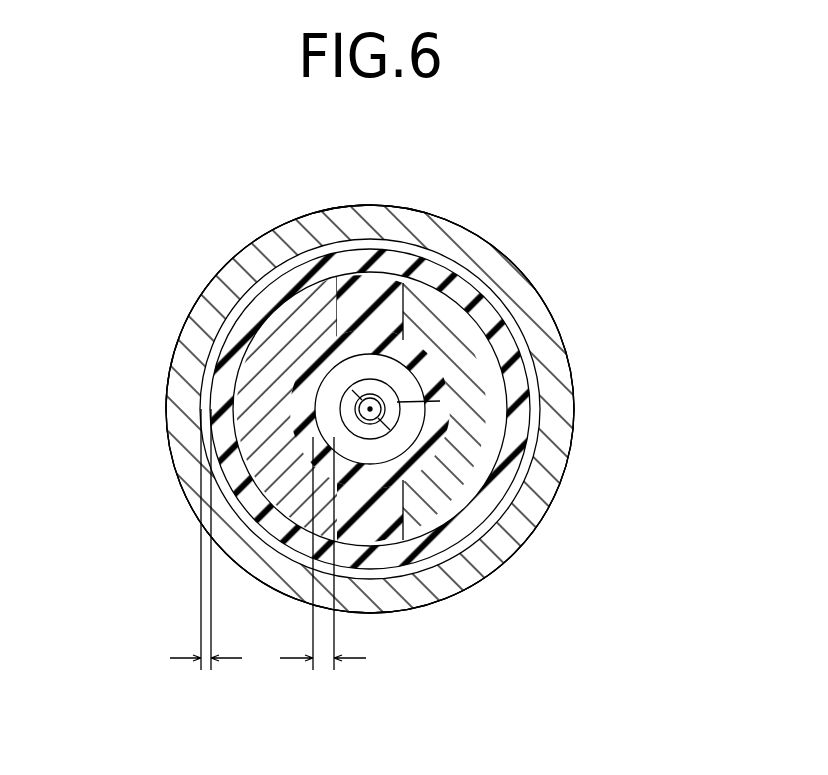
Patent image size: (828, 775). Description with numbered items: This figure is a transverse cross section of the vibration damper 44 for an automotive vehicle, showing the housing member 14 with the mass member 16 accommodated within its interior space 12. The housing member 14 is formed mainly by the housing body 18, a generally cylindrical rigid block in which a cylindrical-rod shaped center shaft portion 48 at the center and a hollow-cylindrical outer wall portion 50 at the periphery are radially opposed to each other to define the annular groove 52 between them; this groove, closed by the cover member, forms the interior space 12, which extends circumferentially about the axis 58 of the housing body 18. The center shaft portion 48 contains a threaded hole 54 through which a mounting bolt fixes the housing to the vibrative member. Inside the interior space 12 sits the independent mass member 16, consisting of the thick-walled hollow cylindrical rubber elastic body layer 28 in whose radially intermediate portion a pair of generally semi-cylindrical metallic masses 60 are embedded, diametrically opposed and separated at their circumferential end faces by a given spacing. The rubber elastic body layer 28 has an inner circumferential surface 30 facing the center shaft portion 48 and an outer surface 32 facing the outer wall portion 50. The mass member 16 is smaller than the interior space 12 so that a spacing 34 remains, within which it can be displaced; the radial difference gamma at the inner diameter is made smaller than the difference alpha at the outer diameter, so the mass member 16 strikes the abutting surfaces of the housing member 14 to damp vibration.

The interior space 12 is at (513, 330).
The housing member 14 is at (208, 259).
The independent mass member 16 is at (268, 268).
The housing body 18 is at (154, 392).
The rubber elastic body layer 28 is at (350, 262).
The inner circumferential surface 30 is at (430, 547).
The outer surface 32 is at (545, 462).
The spacing 34 is at (217, 343).
The vibration damper 44 is at (478, 182).
The center shaft portion 48 is at (465, 413).
The outer wall portion 50 is at (553, 455).
The annular groove 52 is at (359, 365).
The threaded hole 54 is at (358, 417).
The axis 58 is at (370, 409).
The metallic masses 60 is at (283, 485).